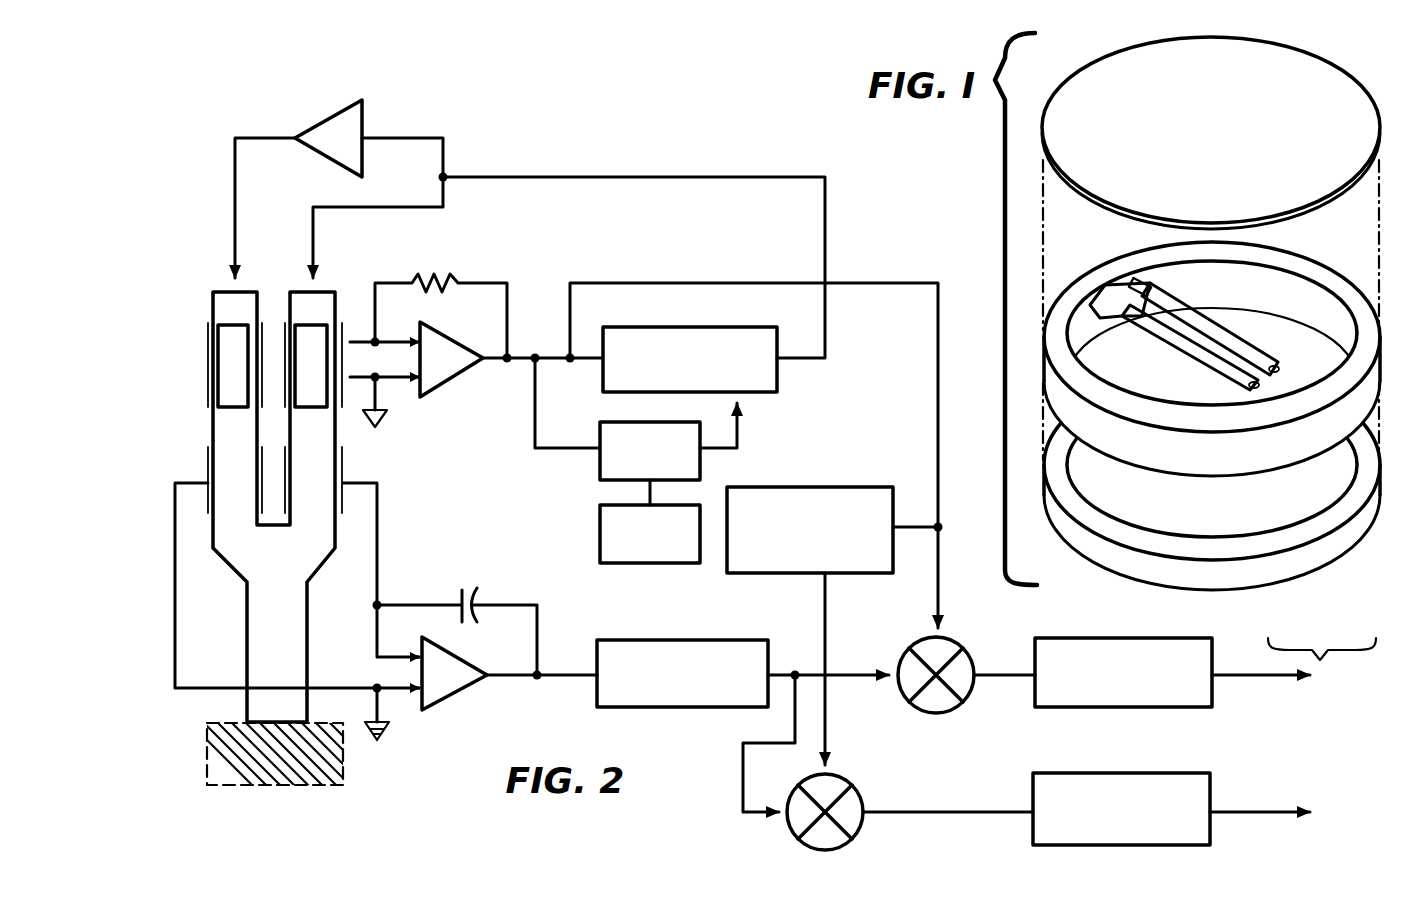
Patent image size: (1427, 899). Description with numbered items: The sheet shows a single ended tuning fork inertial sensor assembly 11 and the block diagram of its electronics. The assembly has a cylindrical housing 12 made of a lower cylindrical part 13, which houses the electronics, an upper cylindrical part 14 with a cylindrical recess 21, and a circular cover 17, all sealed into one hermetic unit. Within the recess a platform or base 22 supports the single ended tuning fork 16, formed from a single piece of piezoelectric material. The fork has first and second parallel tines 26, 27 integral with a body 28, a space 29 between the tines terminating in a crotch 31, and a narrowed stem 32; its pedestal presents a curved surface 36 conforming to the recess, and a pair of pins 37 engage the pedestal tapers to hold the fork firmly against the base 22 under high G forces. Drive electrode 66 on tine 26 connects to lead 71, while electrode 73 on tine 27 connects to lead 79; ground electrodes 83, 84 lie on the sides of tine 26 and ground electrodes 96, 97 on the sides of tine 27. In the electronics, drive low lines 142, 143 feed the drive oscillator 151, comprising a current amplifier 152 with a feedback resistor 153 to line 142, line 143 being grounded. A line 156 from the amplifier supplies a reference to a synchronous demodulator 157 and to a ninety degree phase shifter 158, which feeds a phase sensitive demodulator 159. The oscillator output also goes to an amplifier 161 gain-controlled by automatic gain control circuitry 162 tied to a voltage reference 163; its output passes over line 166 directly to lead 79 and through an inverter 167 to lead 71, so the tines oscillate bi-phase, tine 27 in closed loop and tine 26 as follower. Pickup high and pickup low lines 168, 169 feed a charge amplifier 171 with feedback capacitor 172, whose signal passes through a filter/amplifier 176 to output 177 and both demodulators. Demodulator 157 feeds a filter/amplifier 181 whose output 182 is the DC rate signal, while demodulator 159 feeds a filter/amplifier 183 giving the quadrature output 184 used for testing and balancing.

In FIG. 1, the single ended tuning fork inertial sensor assembly 11 is at (1084, 46).
In FIG. 1, the cylindrical housing 12 is at (1028, 300).
In FIG. 1, the lower cylindrical part 13 is at (1366, 530).
In FIG. 1, the upper cylindrical part 14 is at (1366, 418).
In FIG. 2, the single ended tuning fork 16 is at (118, 362).
In FIG. 1, the single ended tuning fork 16 is at (1224, 319).
In FIG. 1, the circular cover 17 is at (1333, 82).
In FIG. 2, the cylindrical recess 21 is at (228, 424).
In FIG. 1, the cylindrical recess 21 is at (1308, 308).
In FIG. 2, the platform or base 22 is at (225, 752).
In FIG. 1, the platform or base 22 is at (1172, 291).
In FIG. 2, the first tine 26 is at (228, 307).
In FIG. 1, the first tine 26 is at (1252, 355).
In FIG. 2, the second tine 27 is at (312, 325).
In FIG. 1, the second tine 27 is at (1198, 363).
In FIG. 2, the body 28 is at (243, 598).
In FIG. 2, the space 29 is at (262, 414).
In FIG. 2, the crotch 31 is at (265, 527).
In FIG. 2, the stem 32 is at (268, 622).
In FIG. 1, the stem 32 is at (1158, 306).
In FIG. 1, the curved surface 36 is at (1142, 288).
In FIG. 1, the pins 37 is at (1100, 306).
In FIG. 2, the drive electrode 66 is at (235, 378).
In FIG. 2, the lead 71 is at (234, 187).
In FIG. 2, the electrode 73 is at (313, 388).
In FIG. 2, the lead 79 is at (413, 212).
In FIG. 2, the drive No. 1 low or ground electrode 83 is at (207, 335).
In FIG. 2, the drive No. 1 low or ground electrode 84 is at (262, 338).
In FIG. 2, the drive No. 2 low or ground electrode 96 is at (283, 326).
In FIG. 2, the drive No. 2 low or ground electrode 97 is at (344, 358).
In FIG. 2, the drive low line 142 is at (352, 340).
In FIG. 2, the drive low line 143 is at (352, 381).
In FIG. 2, the drive oscillator 151 is at (468, 247).
In FIG. 2, the current amplifier 152 is at (457, 364).
In FIG. 2, the resistor 153 is at (455, 283).
In FIG. 2, the line 156 is at (668, 283).
In FIG. 2, the synchronous demodulator 157 is at (944, 653).
In FIG. 2, the 90° phase shifter 158 is at (866, 487).
In FIG. 2, the phase sensitive demodulator 159 is at (859, 796).
In FIG. 2, the amplifier 161 is at (732, 327).
In FIG. 2, the automatic gain control circuitry 162 is at (610, 432).
In FIG. 2, the voltage reference 163 is at (678, 552).
In FIG. 2, the line 166 is at (551, 177).
In FIG. 2, the inverter 167 is at (366, 122).
In FIG. 2, the pickup high line 168 is at (378, 519).
In FIG. 2, the pickup low line 169 is at (175, 568).
In FIG. 2, the charge amplifier 171 is at (456, 680).
In FIG. 2, the capacitor 172 is at (478, 605).
In FIG. 2, the filter/amplifier 176 is at (745, 647).
In FIG. 2, the output 177 is at (778, 673).
In FIG. 2, the filter/amplifier 181 is at (1190, 693).
In FIG. 2, the output 182 is at (1235, 683).
In FIG. 2, the filter/amplifier 183 is at (1079, 773).
In FIG. 2, the quadrature output 184 is at (1237, 812).